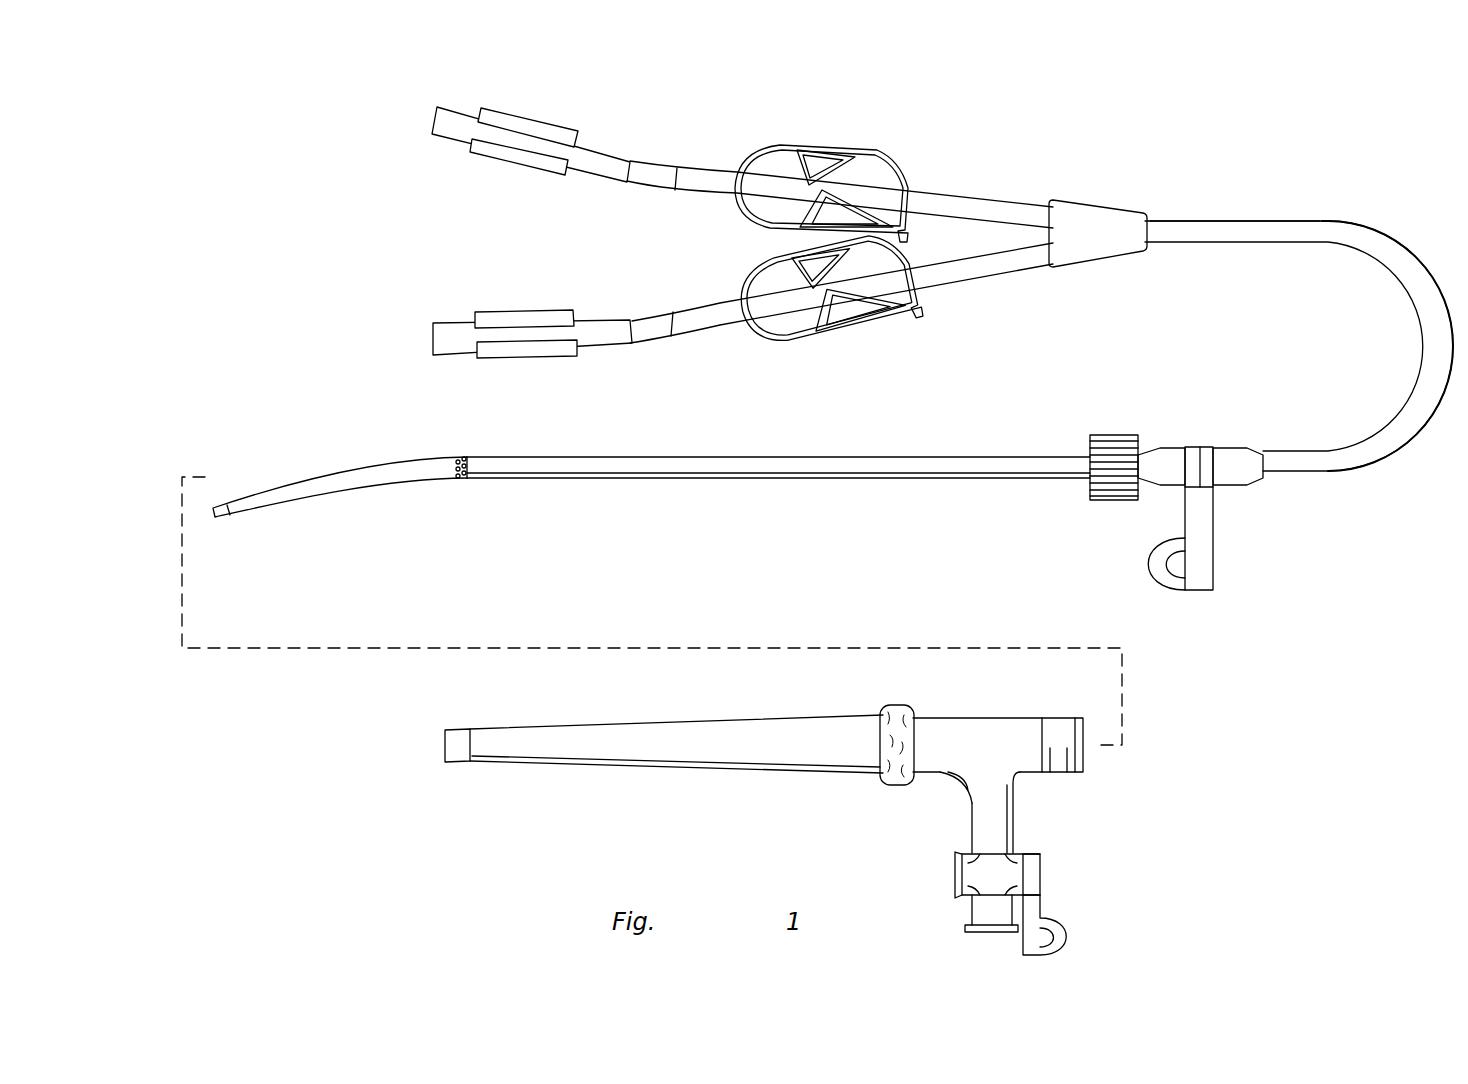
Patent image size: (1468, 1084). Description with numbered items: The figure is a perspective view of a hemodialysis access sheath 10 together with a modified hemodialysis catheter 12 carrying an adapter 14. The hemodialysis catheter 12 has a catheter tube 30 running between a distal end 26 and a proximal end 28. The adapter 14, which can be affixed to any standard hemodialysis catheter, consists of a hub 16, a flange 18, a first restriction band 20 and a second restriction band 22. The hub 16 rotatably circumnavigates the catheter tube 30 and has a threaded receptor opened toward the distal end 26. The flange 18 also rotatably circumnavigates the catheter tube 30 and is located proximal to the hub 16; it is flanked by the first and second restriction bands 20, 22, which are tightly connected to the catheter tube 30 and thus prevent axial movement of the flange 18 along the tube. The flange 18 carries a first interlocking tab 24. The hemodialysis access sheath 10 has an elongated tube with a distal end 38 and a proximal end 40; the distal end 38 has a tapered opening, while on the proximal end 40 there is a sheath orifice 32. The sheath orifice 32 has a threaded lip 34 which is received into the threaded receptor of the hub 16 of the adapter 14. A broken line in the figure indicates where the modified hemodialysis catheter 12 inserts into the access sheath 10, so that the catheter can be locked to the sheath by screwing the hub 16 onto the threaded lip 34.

The hemodialysis access sheath 10 is at (776, 708).
The hemodialysis catheter 12 is at (1279, 198).
The adapter 14 is at (1290, 425).
The hub 16 is at (1115, 502).
The flange 18 is at (1215, 538).
The first restriction band 20 is at (1247, 476).
The second restriction band 22 is at (1178, 476).
The first interlocking tab 24 is at (1176, 571).
The distal end 26 is at (360, 506).
The proximal end 28 is at (1237, 255).
The catheter tube 30 is at (807, 465).
The sheath orifice 32 is at (1083, 765).
The threaded lip 34 is at (1065, 728).
The distal end 38 is at (472, 782).
The proximal end 40 is at (1054, 806).